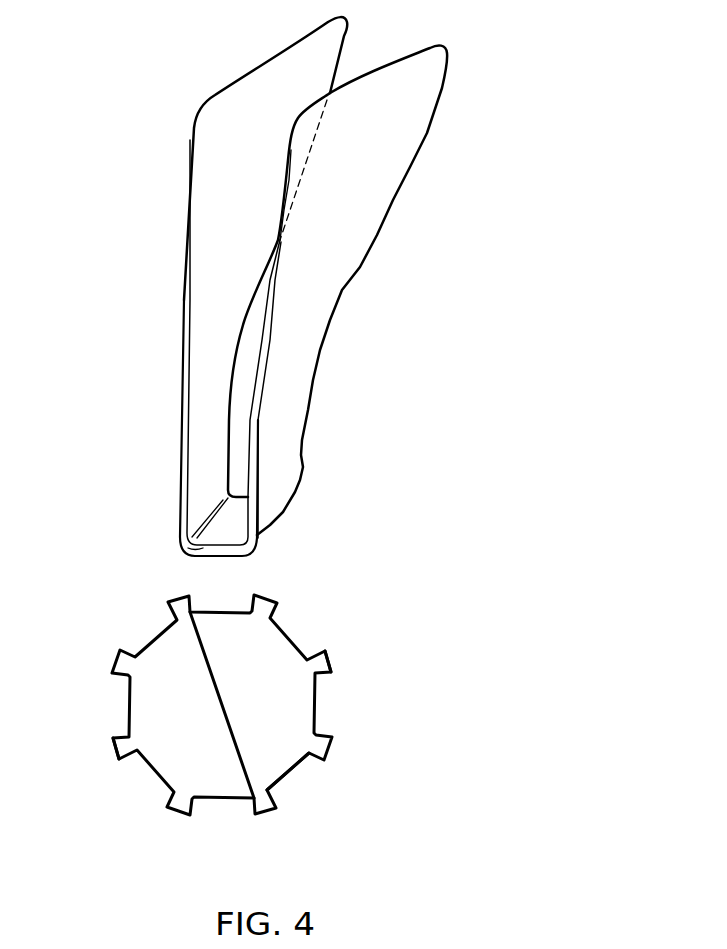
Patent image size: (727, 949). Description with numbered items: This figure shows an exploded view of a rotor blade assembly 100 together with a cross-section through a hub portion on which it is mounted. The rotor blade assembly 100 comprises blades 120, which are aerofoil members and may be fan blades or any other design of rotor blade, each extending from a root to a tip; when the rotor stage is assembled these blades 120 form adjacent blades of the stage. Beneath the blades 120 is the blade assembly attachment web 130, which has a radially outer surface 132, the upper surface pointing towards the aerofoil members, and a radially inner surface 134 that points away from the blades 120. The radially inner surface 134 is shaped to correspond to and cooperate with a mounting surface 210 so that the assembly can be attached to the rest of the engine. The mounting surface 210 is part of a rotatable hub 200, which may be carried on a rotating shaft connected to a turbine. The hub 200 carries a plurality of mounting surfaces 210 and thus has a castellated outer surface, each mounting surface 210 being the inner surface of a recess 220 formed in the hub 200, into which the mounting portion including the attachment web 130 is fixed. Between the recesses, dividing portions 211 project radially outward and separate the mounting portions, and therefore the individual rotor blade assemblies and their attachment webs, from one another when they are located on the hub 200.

The rotor blade assembly 100 is at (472, 147).
The blades 120 is at (210, 325).
The blade assembly attachment web 130 is at (182, 542).
The radially outer surface 132 is at (228, 520).
The radially inner surface 134 is at (233, 557).
The rotatable hub 200 is at (290, 703).
The mounting surface 210 is at (206, 604).
The dividing portions 211 is at (334, 650).
The recess 220 is at (229, 813).